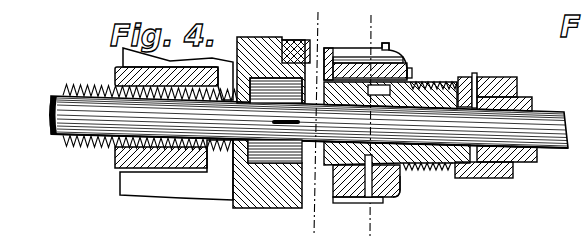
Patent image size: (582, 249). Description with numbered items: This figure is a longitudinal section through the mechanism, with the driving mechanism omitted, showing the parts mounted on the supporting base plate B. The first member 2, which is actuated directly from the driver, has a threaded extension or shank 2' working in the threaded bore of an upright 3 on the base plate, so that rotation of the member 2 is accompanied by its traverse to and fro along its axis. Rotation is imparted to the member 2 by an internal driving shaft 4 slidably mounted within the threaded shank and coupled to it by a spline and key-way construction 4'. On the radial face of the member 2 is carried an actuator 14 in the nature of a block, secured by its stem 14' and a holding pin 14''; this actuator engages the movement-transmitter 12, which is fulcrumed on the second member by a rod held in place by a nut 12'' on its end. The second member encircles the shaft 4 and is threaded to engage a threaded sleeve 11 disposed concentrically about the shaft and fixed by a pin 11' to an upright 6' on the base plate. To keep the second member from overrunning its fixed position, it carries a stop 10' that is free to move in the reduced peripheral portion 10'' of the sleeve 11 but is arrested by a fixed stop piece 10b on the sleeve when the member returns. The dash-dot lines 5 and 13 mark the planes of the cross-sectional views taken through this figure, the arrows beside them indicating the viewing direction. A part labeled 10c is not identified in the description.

The internal driving shaft 4 is at (297, 113).
The spline and key-way construction 4' is at (38, 120).
The upright 3 is at (115, 72).
The threaded extension or shank 2' is at (147, 158).
The supporting base plate B is at (188, 185).
The member directly actuated from the driver 2 is at (267, 188).
The stem 14' is at (275, 120).
The holding pin 14'' is at (271, 55).
The actuator 14 is at (298, 40).
The line 5— 5 is at (338, 23).
The line 13— 13 is at (390, 32).
The movement-transmitter 12 is at (365, 53).
The flange tab 10c is at (386, 49).
The nut 12'' is at (393, 64).
The stop 10' is at (397, 152).
The threaded sleeve 11 is at (430, 120).
The reduced peripheral portion 10'' is at (388, 177).
The fixed stop piece 10b is at (396, 192).
The pin 11' is at (484, 75).
The upright 6' is at (496, 115).